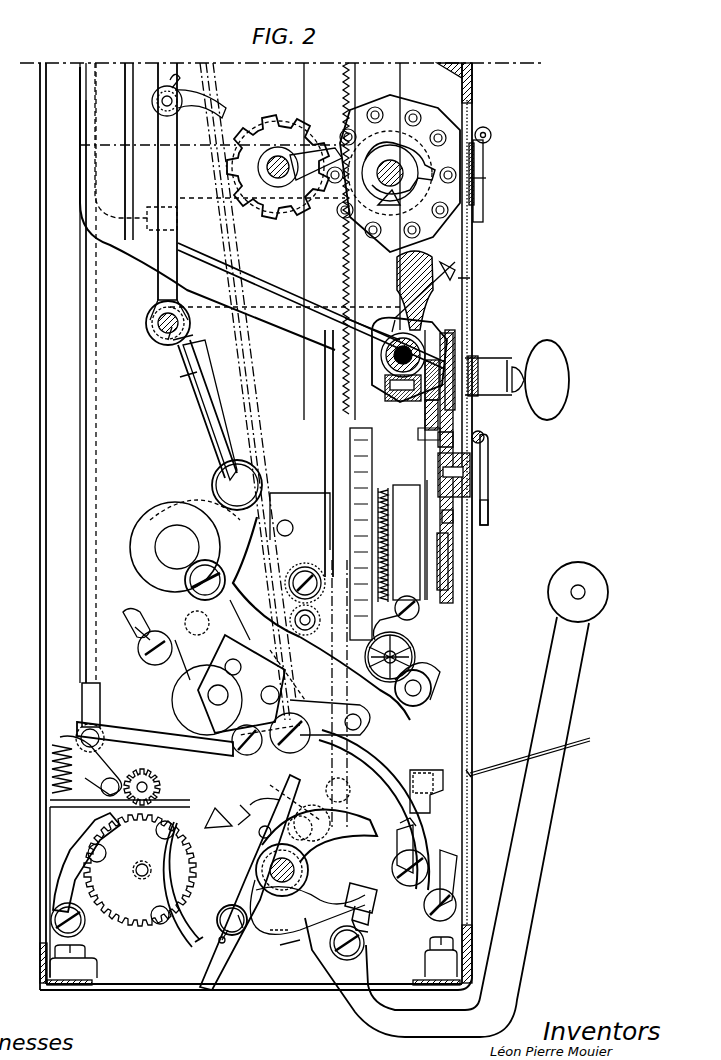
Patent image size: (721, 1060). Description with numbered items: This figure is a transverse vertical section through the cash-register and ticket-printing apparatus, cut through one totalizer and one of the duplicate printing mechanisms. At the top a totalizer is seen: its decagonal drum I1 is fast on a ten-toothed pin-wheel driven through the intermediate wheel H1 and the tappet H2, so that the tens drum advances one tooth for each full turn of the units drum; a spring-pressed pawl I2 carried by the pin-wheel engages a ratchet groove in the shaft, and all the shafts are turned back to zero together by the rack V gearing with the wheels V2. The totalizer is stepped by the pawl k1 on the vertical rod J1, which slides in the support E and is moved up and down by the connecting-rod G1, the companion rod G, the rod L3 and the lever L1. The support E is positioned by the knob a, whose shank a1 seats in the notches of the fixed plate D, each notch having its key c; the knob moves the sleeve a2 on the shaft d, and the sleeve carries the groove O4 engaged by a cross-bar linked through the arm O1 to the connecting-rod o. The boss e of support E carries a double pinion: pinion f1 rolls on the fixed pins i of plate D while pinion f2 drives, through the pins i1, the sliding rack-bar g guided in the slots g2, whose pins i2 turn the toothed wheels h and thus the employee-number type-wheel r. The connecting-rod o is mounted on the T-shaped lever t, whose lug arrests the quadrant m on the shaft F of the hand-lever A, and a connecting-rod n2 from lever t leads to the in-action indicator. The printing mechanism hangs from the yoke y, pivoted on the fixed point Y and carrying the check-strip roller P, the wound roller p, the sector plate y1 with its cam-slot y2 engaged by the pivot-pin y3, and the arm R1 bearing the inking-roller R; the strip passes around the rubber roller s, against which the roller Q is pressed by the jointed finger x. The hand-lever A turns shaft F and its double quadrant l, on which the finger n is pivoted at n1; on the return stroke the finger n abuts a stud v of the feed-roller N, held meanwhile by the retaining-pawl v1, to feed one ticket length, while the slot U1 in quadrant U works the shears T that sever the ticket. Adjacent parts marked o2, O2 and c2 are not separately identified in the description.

The hand-lever A is at (456, 799).
The tappet H2 is at (305, 150).
The intermediate wheel H1 is at (278, 167).
The decagonal drum I1 is at (400, 120).
The spring-pressed pawl I2 is at (436, 160).
The wheel V2 is at (440, 190).
The rack V is at (331, 238).
The vertical rod J1 is at (170, 162).
The pawl k1 is at (189, 106).
The supporting-frame E is at (176, 317).
The rod L3 is at (165, 333).
The lever L1 is at (205, 406).
The connecting-rod G1 is at (206, 410).
The connecting-rod G is at (248, 391).
The connecting-rod n2 is at (101, 391).
The arm O1 is at (405, 265).
The groove O4 is at (372, 321).
The pin o2 is at (427, 260).
The arm O2 is at (440, 318).
The sleeve a2 is at (432, 325).
The boss e is at (383, 345).
The shaft d is at (390, 378).
The pinion f1 is at (455, 332).
The knob a is at (540, 380).
The shank a1 is at (488, 376).
The plate D is at (460, 425).
The pinion f2 is at (425, 415).
The pins i1 is at (418, 435).
The pins i is at (438, 440).
The key c is at (488, 448).
The slots g2 is at (468, 488).
The sliding rack-bar g is at (428, 510).
The pins i2 is at (453, 515).
The stop c2 is at (488, 519).
The toothed wheels h is at (445, 592).
The type-wheel r is at (372, 462).
The connecting-rod o is at (330, 470).
The fixed point Y is at (478, 850).
The pivot-pin y3 is at (195, 580).
The roller P is at (185, 546).
The cam-slot y2 is at (210, 607).
The sector-shaped plate y1 is at (210, 620).
The roller p is at (228, 667).
The T-shaped lever t is at (110, 730).
The roller Q is at (215, 752).
The rubber roller s is at (140, 770).
The arm R1 is at (362, 712).
The inking-roller R is at (432, 680).
The yoke y is at (370, 722).
The quadrant U is at (430, 770).
The slot U1 is at (356, 795).
The shears T is at (455, 772).
The jointed finger x is at (262, 810).
The shaft F is at (296, 878).
The double quadrant l is at (360, 897).
The finger n is at (218, 972).
The pivot n1 is at (232, 924).
The quadrant m is at (196, 935).
The feed-roller N is at (253, 895).
The studs v is at (97, 850).
The retaining-pawl v1 is at (90, 873).